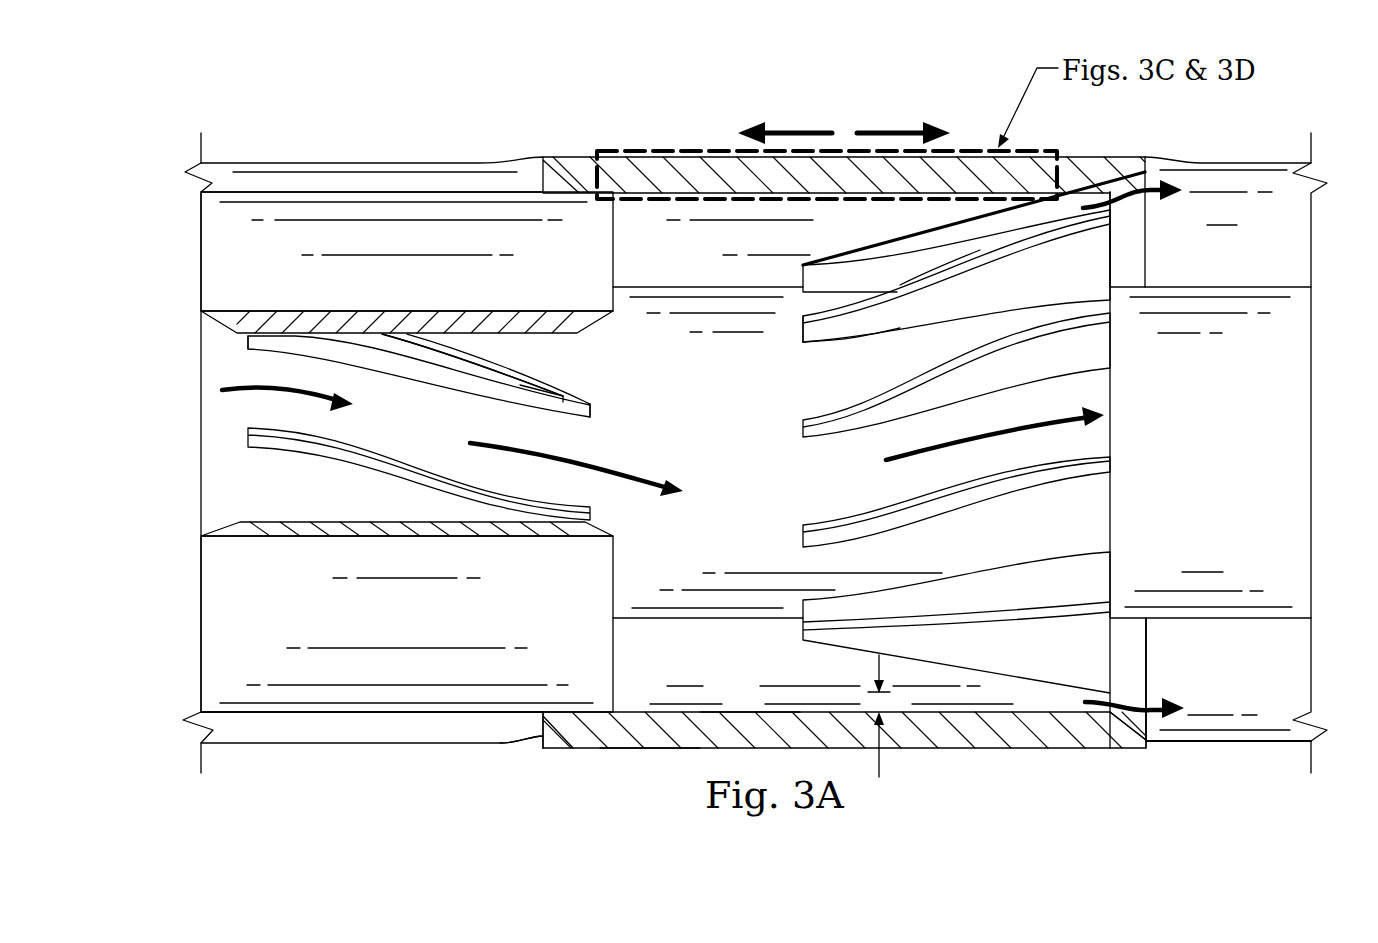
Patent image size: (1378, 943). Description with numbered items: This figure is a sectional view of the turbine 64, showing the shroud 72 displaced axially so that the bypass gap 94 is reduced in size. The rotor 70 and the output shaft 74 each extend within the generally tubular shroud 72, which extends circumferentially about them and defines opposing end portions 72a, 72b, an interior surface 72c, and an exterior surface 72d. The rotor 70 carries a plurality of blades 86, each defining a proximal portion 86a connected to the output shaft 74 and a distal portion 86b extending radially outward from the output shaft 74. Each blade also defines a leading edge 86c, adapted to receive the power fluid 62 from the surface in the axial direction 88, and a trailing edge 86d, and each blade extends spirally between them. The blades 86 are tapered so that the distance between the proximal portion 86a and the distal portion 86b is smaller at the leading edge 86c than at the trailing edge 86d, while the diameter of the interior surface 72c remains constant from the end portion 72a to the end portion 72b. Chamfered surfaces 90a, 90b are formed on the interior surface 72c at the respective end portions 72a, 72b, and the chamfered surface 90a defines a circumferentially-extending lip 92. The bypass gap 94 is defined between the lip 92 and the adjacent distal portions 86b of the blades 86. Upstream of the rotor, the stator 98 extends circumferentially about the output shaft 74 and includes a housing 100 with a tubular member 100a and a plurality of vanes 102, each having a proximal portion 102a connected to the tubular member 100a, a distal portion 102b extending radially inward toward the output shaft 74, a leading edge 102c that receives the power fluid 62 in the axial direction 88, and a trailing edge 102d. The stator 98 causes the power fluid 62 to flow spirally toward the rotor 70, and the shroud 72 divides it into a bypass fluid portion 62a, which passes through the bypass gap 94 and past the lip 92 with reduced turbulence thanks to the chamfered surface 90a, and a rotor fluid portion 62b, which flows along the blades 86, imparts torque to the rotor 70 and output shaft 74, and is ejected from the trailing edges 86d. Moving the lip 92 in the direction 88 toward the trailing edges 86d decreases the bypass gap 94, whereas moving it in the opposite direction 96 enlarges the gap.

The turbine 64 is at (296, 119).
The shroud 72 is at (690, 165).
The end portion 72a is at (1146, 746).
The end portion 72b is at (541, 749).
The interior surface 72c is at (749, 712).
The exterior surface 72d is at (638, 752).
The direction 96 is at (795, 130).
The axial direction 88 is at (890, 130).
The power fluid 62 is at (235, 390).
The bypass fluid portion 62a is at (1127, 187).
The rotor fluid portion 62b is at (885, 453).
The stator 98 is at (205, 245).
The vanes 102 is at (333, 348).
The proximal portion 102a is at (560, 389).
The distal portion 102b is at (408, 380).
The leading edge 102c is at (245, 340).
The trailing edge 102d is at (598, 404).
The rotor 70 is at (861, 275).
The blades 86 is at (1112, 578).
The proximal portion 86a is at (838, 343).
The distal portion 86b is at (930, 270).
The leading edge 86c is at (803, 337).
The trailing edge 86d is at (1110, 265).
The output shaft 74 is at (1226, 465).
The housing 100 is at (205, 583).
The tubular member 100a is at (205, 650).
The circumferentially-extending lip 92 is at (1135, 637).
The chamfered surface 90a is at (1133, 720).
The chamfered surface 90b is at (545, 725).
The bypass gap 94 is at (880, 765).